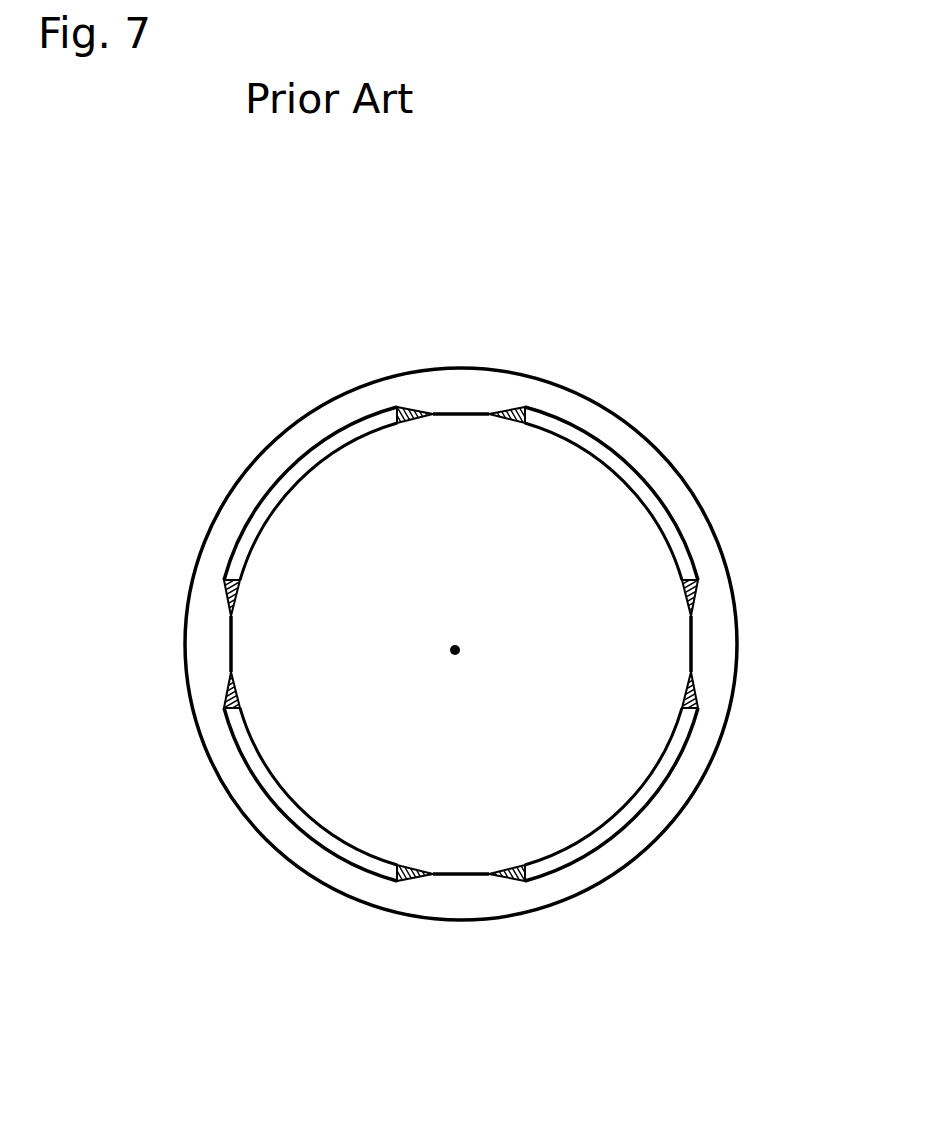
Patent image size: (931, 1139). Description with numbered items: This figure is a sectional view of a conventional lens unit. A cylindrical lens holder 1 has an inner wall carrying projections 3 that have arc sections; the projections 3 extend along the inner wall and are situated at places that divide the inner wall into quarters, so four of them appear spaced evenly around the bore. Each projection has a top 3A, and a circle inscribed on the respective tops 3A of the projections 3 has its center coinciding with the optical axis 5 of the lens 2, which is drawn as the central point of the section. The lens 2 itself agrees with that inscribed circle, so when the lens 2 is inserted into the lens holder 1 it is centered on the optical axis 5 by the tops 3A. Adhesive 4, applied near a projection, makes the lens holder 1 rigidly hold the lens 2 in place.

The lens holder 1 is at (698, 532).
The lens 2 is at (575, 528).
The projections 3 is at (462, 407).
The tops of projections 3A is at (458, 415).
The adhesive 4 is at (520, 405).
The optical axis 5 is at (455, 650).